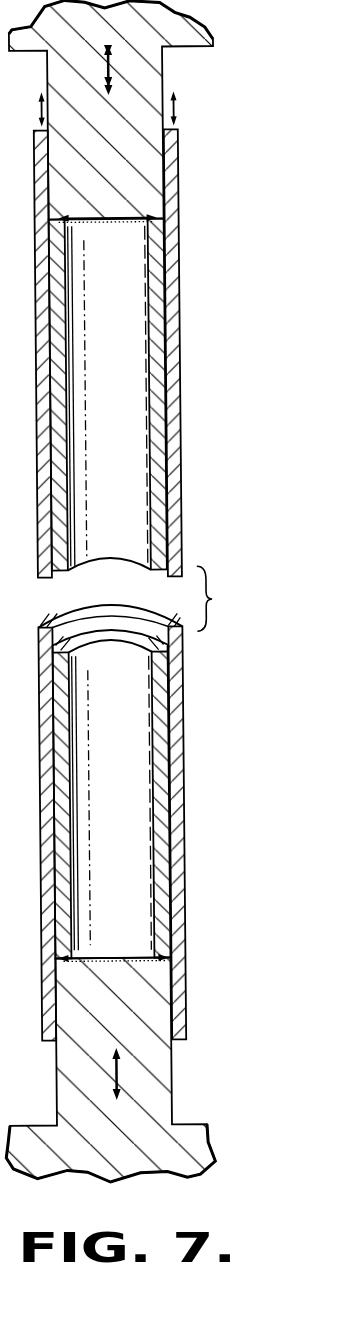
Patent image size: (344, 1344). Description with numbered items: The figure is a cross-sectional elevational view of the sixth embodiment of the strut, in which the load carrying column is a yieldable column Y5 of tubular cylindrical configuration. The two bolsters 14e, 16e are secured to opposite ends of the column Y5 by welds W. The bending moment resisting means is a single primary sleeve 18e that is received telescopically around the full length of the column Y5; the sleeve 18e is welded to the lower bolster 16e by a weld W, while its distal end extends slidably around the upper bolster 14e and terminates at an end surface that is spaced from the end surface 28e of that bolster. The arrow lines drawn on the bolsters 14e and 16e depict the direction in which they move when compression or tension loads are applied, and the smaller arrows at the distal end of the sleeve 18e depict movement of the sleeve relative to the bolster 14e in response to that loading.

The bolster 14e is at (153, 285).
The bolster 16e is at (153, 1090).
The primary sleeve 18e is at (180, 372).
The end surface 28e is at (205, 55).
The weld W is at (70, 222).
The yieldable column Y5 is at (156, 727).